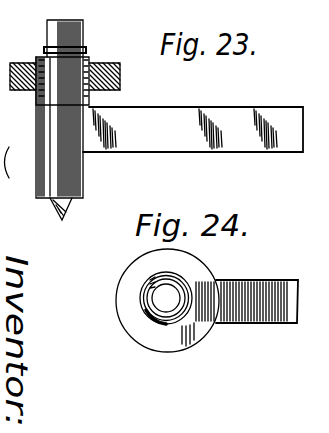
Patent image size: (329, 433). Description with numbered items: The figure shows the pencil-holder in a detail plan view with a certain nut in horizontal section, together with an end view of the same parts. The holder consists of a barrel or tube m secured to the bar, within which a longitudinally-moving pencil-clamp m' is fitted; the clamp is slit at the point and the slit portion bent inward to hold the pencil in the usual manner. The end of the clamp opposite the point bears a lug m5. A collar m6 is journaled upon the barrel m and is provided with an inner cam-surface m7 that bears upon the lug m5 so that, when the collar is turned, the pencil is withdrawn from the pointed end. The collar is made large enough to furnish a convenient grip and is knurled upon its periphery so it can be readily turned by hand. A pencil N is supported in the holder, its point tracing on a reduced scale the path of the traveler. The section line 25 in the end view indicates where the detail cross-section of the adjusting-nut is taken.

In FIG. 23, the barrel m is at (73, 120).
In FIG. 24, the barrel m is at (188, 287).
In FIG. 23, the pencil-clamp m' is at (85, 51).
In FIG. 24, the pencil-clamp m' is at (166, 298).
In FIG. 23, the lug m5 is at (46, 49).
In FIG. 24, the lug m5 is at (168, 325).
In FIG. 23, the collar m6 is at (121, 92).
In FIG. 24, the collar m6 is at (134, 295).
In FIG. 23, the cam-surface m7 is at (34, 120).
In FIG. 24, the cam-surface m7 is at (155, 326).
In FIG. 23, the pencil N is at (72, 120).
In FIG. 24, the pencil N is at (215, 335).
In FIG. 24, the section line 25 is at (142, 315).